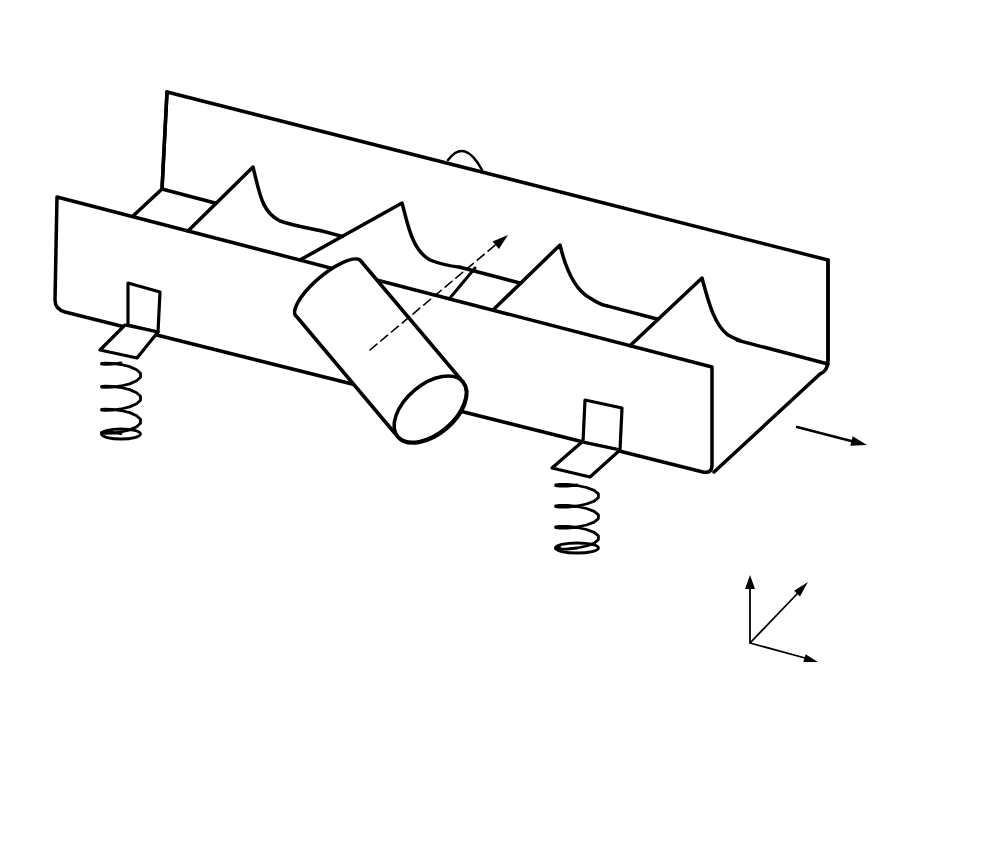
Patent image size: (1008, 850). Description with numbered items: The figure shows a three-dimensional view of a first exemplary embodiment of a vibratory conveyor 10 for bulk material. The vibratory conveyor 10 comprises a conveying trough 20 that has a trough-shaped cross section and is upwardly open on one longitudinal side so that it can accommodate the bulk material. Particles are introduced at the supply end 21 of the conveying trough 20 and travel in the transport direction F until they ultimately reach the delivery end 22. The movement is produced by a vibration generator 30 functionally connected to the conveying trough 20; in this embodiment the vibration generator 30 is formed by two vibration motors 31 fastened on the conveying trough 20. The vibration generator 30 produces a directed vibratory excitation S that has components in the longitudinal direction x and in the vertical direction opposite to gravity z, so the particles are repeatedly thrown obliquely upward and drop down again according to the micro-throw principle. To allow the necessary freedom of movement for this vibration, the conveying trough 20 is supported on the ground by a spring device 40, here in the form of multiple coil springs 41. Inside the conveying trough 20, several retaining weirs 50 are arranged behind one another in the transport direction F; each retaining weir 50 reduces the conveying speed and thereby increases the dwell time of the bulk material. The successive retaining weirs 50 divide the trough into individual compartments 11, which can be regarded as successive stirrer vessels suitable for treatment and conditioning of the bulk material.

The vibratory conveyor 10 is at (705, 119).
The compartments 11 is at (410, 267).
The conveying trough 20 is at (517, 178).
The supply end 21 is at (153, 193).
The delivery end 22 is at (820, 383).
The vibration generator 30 is at (348, 337).
The vibration motors 31 is at (372, 367).
The spring device 40 is at (140, 398).
The coil springs 41 is at (103, 413).
The retaining weir 50 is at (243, 168).